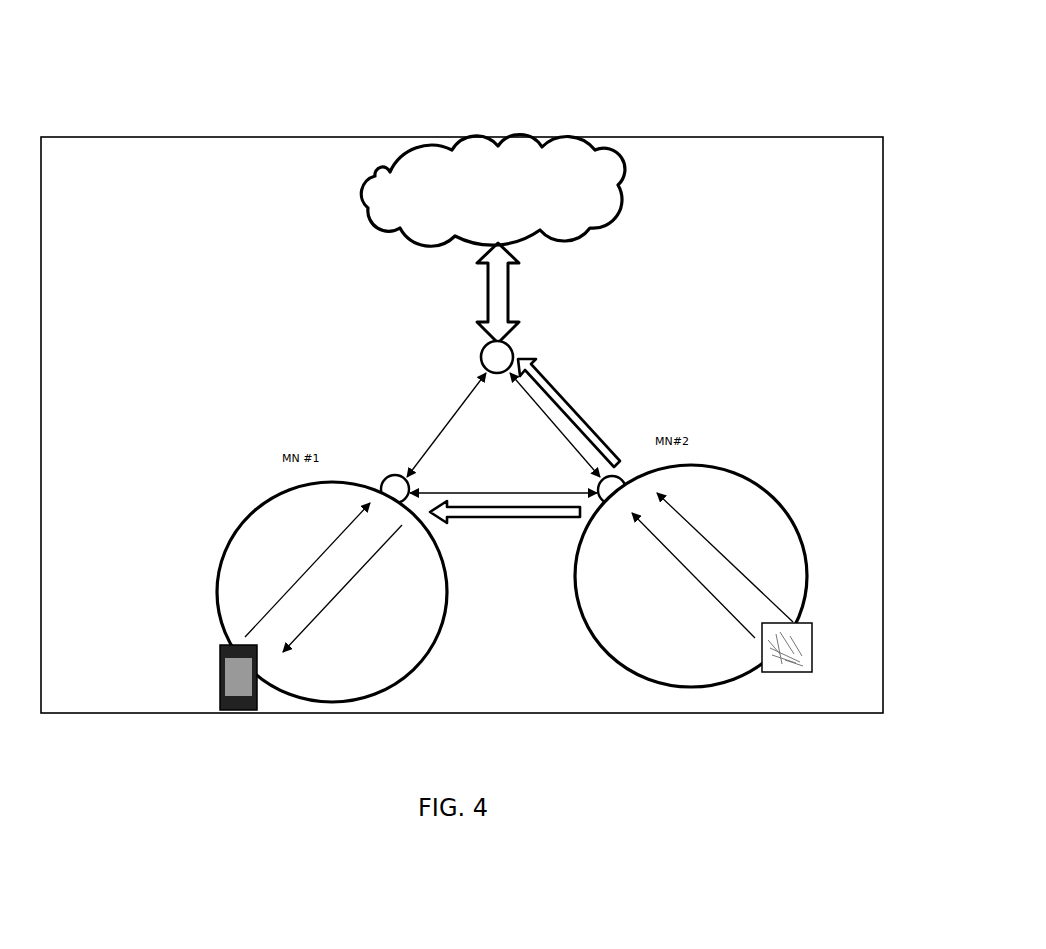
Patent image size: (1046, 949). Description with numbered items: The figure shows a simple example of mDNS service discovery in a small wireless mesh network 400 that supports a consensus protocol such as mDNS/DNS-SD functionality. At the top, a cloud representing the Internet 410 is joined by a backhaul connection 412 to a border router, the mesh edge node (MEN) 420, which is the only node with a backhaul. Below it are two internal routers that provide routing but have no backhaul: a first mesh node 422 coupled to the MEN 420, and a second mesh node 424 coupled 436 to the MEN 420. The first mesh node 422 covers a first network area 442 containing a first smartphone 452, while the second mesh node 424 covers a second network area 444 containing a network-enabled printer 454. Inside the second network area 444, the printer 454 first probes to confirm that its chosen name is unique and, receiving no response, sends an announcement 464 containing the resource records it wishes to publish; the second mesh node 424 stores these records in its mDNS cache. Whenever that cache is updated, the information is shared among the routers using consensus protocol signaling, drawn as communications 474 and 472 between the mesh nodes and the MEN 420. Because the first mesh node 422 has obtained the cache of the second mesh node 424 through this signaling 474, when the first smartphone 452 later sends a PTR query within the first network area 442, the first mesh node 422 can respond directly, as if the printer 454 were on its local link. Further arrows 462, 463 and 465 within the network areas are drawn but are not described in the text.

The small wireless mesh network 400 is at (288, 90).
The Internet 410 is at (632, 190).
The backhaul connection 412 is at (510, 314).
The mesh edge node (MEN) 420 is at (507, 373).
The first mesh node (MN#1) 422 is at (386, 480).
The second mesh node (MN#2) 424 is at (630, 438).
The coupling between second MN#2 and MEN 436 is at (553, 425).
The first network area 442 is at (217, 585).
The second network area 444 is at (808, 563).
The first smartphone#1 452 is at (220, 687).
The network-enabled printer 454 is at (812, 672).
The uplink transmission in MN #1 area 462 is at (313, 563).
The downlink transmission in MN #1 area 463 is at (343, 588).
The announcement 464 is at (677, 562).
The transmission in MN #2 area 465 is at (717, 551).
The consensus protocol communication 472 is at (548, 384).
The consensus protocol signaling 474 is at (516, 518).